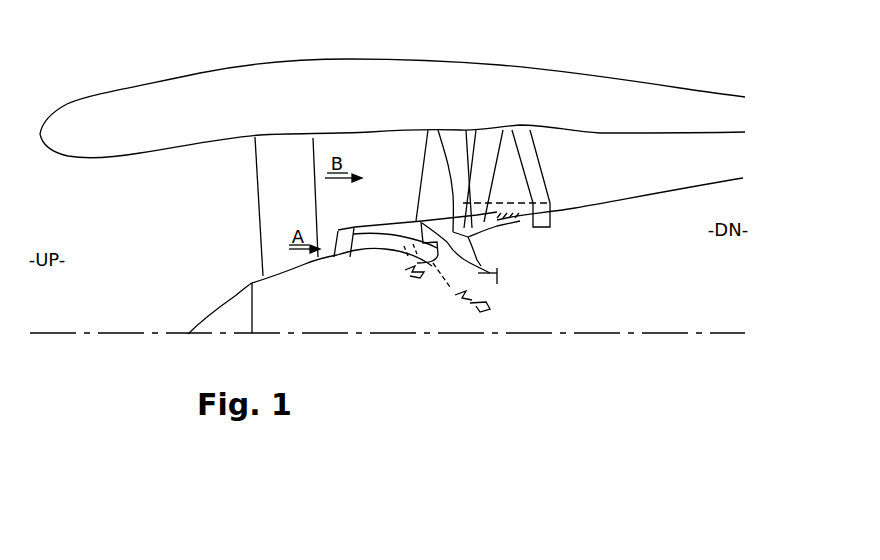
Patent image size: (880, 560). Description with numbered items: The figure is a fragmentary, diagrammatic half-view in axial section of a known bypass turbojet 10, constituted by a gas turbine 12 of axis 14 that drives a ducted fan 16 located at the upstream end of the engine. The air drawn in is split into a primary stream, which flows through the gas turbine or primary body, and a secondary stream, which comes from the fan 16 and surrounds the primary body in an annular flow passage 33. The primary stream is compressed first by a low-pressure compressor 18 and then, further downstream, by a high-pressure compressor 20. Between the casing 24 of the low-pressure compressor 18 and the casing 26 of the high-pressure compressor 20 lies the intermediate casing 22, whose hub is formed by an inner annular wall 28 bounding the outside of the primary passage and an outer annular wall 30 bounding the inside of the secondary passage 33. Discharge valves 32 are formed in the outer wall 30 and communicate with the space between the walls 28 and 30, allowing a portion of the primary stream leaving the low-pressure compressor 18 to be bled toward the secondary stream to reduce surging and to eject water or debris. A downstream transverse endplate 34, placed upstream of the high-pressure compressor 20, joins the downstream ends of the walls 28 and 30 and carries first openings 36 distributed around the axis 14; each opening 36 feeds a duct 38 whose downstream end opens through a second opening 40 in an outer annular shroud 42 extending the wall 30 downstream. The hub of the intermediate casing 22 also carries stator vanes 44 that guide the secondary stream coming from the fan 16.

The bypass turbojet 10 is at (157, 60).
The gas turbine 12 is at (714, 263).
The axis 14 is at (642, 334).
The ducted fan 16 is at (230, 212).
The low-pressure compressor 18 is at (378, 248).
The high-pressure compressor 20 is at (465, 266).
The intermediate casing 22 is at (422, 290).
The casing of the low-pressure compressor 24 is at (377, 226).
The casing of the high-pressure compressor 26 is at (499, 266).
The inner annular wall 28 is at (468, 263).
The outer annular wall 30 is at (438, 130).
The discharge valves 32 is at (432, 260).
The annular flow passage for the secondary air stream 33 is at (620, 186).
The downstream transverse endplate 34 is at (498, 243).
The first openings 36 is at (467, 130).
The duct 38 is at (515, 228).
The second opening 40 is at (504, 232).
The outer annular shroud 42 is at (503, 130).
The stator vanes 44 is at (417, 149).